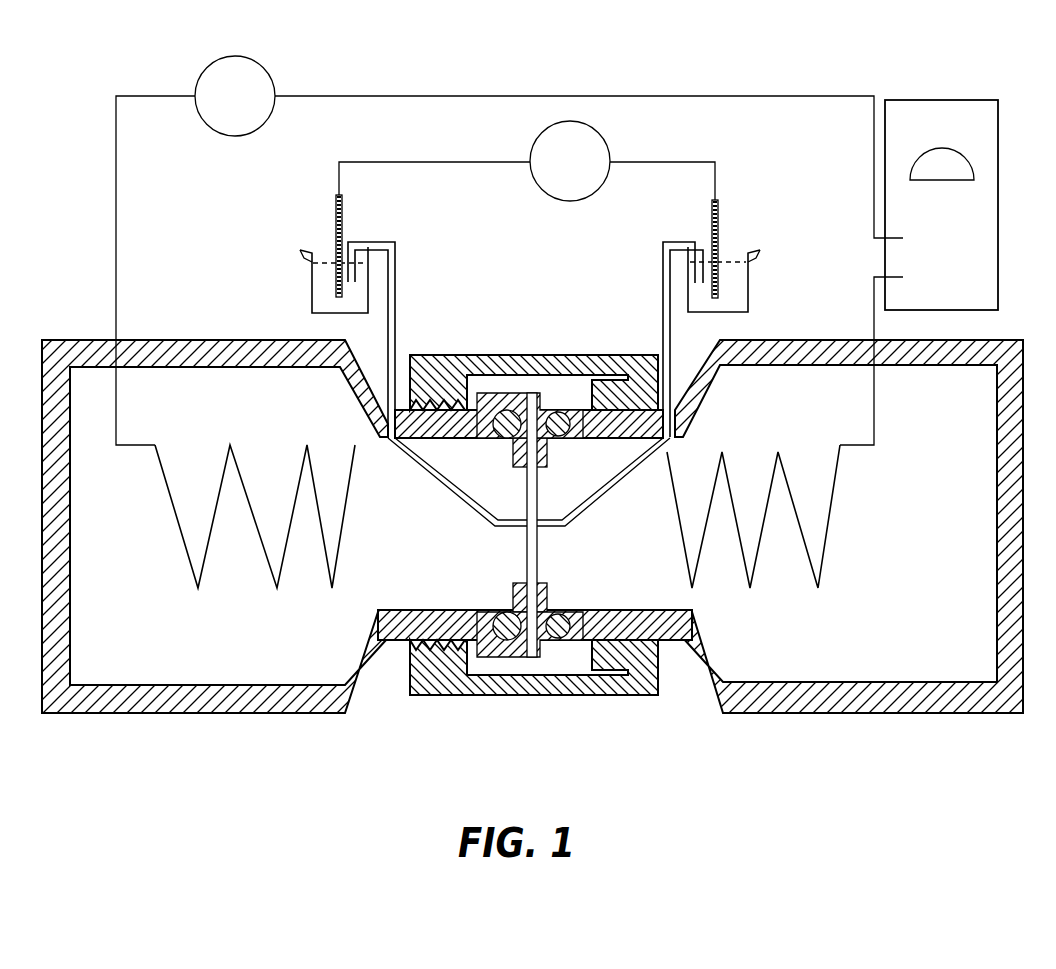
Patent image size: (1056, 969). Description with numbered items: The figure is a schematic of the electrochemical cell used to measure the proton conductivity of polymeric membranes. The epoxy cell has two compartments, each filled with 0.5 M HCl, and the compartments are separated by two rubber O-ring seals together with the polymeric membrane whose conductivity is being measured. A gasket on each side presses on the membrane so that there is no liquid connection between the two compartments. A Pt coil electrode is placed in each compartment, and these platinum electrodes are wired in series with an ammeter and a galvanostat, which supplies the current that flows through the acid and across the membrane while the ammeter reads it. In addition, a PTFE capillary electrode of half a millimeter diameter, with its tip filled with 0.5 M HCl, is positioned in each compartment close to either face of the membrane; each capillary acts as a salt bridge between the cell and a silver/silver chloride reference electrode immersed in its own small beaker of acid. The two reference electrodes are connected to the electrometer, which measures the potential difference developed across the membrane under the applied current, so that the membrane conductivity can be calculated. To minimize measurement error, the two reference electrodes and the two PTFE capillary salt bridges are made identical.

The element ammeter is at (475, 250).
The element electrometer is at (567, 157).
The element galvanostat is at (940, 97).
The 0.5 mol kg-1 hydrochloric acid 0.5 M HCl is at (308, 285).
The PTFE capillary electrode PTFE capillary is at (662, 323).
The platinum electrode Pt coil is at (260, 577).
The polymeric membrane is at (526, 552).
The VITON O-ring rubber O-ring is at (536, 652).
The element gasket is at (553, 601).